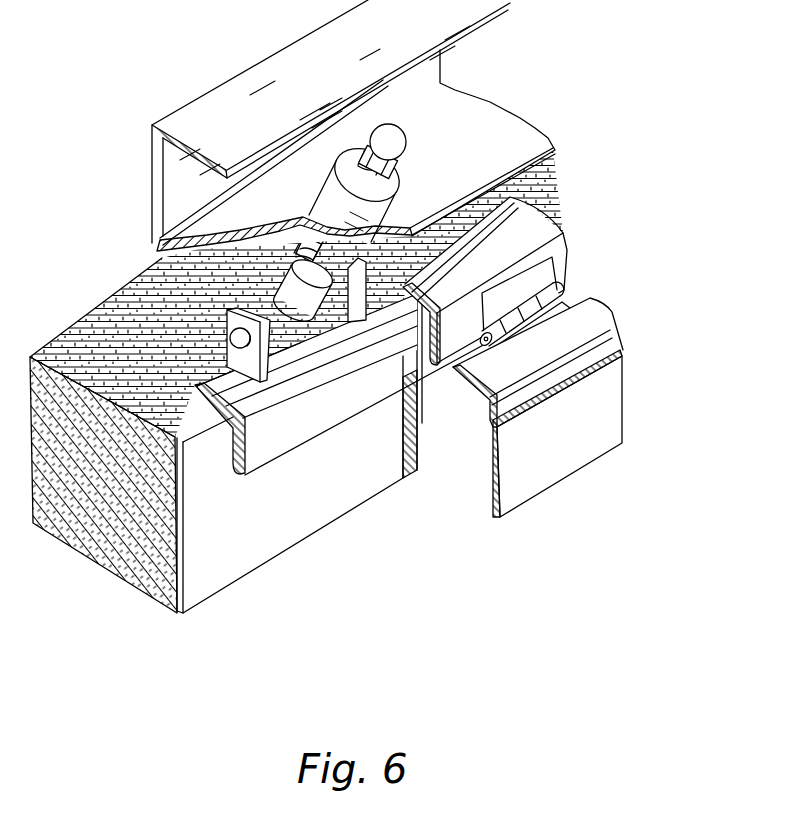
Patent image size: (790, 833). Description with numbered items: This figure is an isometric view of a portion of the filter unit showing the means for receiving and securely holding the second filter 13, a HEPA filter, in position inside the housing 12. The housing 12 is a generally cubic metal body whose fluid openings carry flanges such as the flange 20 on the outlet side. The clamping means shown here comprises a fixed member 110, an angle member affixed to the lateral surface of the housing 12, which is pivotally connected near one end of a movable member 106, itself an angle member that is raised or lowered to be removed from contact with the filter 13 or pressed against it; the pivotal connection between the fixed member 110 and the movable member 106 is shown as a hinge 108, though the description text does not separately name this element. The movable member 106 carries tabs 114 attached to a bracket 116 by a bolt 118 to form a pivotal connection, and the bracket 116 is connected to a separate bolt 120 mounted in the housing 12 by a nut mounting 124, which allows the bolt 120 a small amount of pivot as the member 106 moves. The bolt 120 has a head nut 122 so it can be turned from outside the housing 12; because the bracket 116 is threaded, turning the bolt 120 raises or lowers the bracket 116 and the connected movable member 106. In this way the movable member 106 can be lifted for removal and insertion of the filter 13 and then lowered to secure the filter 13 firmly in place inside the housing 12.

The housing 12 is at (627, 417).
The second filter 13 is at (110, 572).
The flange 20 is at (267, 57).
The movable member 106 is at (306, 437).
The hinge 108 is at (558, 296).
The fixed member 110 is at (613, 332).
The tab 114 is at (273, 368).
The bracket 116 is at (325, 308).
The bolt 118 is at (235, 353).
The bolt 120 is at (410, 168).
The head nut 122 is at (406, 134).
The nut mounting 124 is at (316, 198).